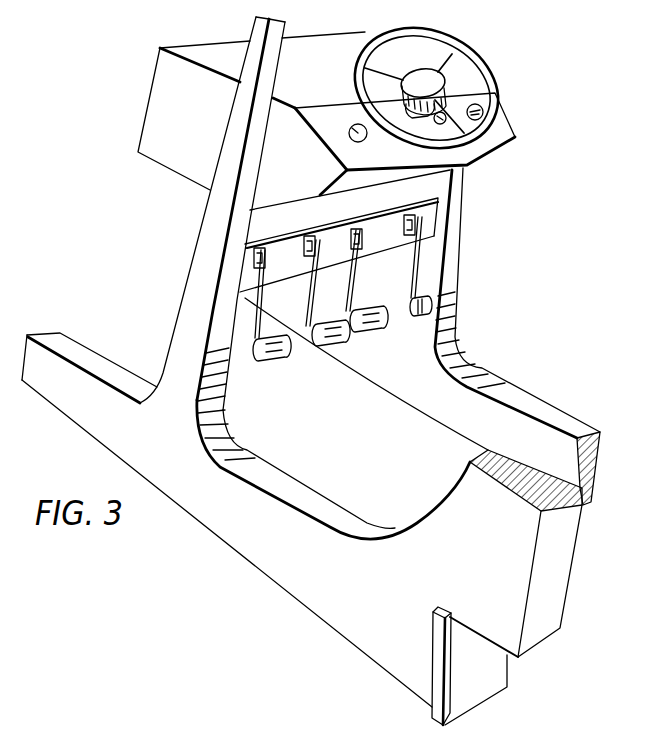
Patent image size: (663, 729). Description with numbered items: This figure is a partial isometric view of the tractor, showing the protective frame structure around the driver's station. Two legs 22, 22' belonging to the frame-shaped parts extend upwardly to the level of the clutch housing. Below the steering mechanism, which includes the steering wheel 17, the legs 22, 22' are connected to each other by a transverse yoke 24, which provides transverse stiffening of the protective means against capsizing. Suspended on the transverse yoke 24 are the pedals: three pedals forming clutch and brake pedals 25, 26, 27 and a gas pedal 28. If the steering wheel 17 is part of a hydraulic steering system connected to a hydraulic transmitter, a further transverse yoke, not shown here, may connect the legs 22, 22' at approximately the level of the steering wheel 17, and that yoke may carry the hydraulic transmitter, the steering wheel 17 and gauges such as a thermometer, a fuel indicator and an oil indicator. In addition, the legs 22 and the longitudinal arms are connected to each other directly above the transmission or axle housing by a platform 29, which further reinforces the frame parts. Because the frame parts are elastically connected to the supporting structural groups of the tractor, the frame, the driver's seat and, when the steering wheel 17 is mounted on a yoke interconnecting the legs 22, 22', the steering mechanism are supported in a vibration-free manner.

The steering wheel 17 is at (492, 97).
The leg 22 is at (153, 238).
The leg 22' is at (517, 412).
The transverse yoke 24 is at (387, 242).
The clutch and brake pedal 25 is at (272, 362).
The clutch and brake pedal 26 is at (330, 347).
The clutch and brake pedal 27 is at (367, 333).
The gas pedal 28 is at (421, 318).
The platform 29 is at (330, 470).